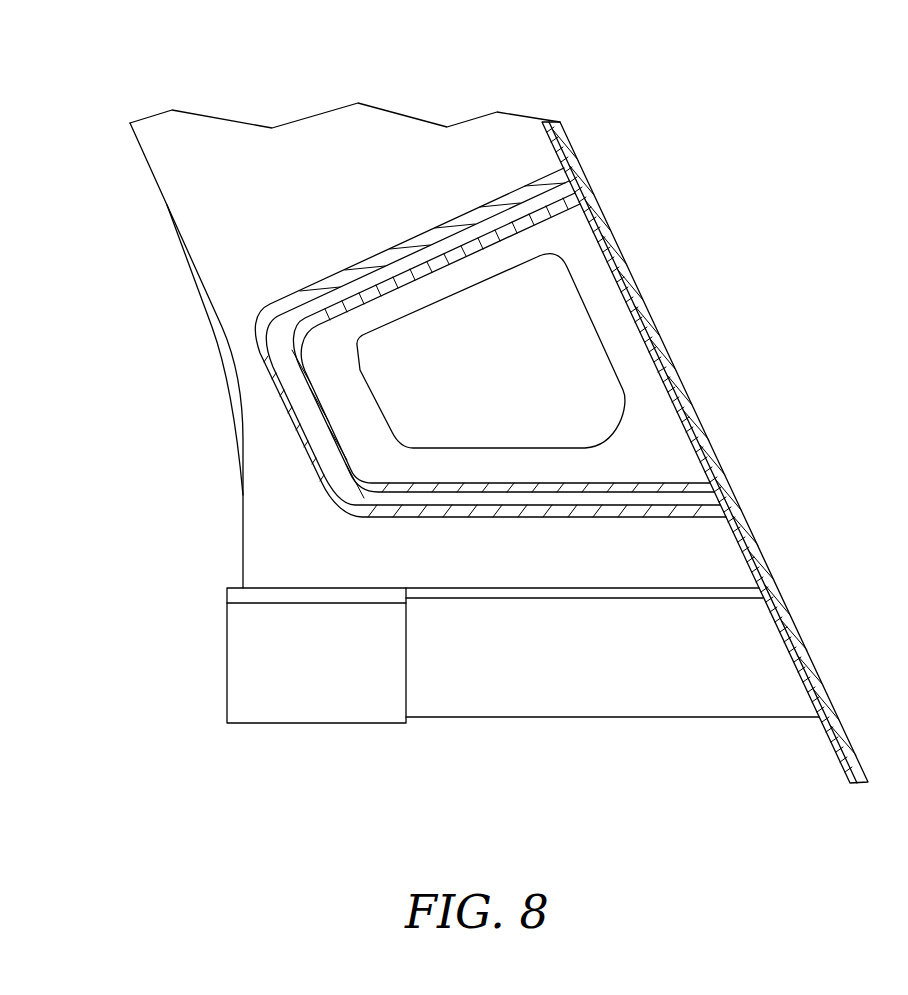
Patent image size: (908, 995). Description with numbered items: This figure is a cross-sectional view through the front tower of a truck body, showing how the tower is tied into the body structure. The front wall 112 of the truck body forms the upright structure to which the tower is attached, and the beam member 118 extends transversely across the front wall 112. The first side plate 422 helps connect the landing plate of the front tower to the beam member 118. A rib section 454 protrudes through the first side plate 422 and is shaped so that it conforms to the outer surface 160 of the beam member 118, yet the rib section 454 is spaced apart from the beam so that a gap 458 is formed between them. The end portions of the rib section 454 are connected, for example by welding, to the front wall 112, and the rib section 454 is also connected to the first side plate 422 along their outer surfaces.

The front wall 112 is at (727, 511).
The beam member 118 is at (568, 235).
The outer surface 160 is at (415, 274).
The first side plate 422 is at (200, 182).
The rib section 454 is at (383, 253).
The gap 458 is at (284, 310).